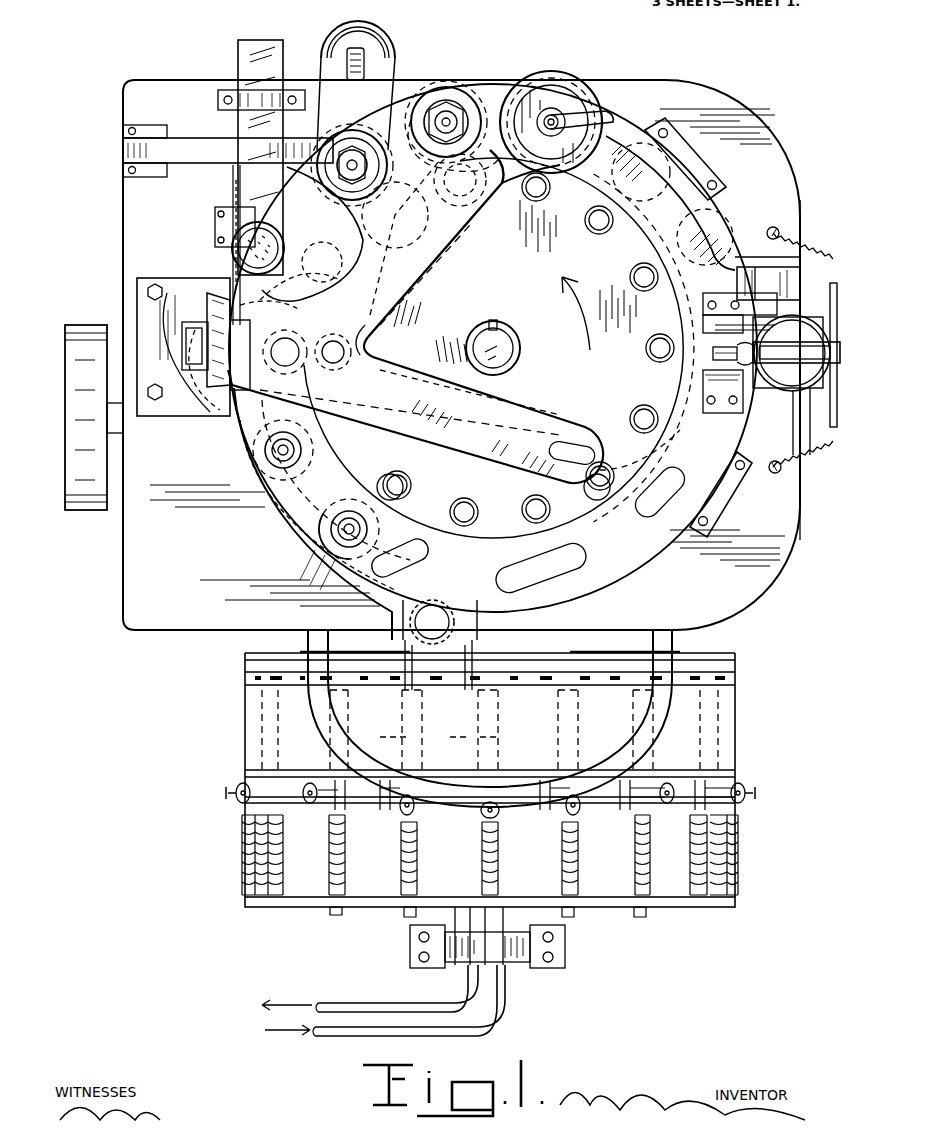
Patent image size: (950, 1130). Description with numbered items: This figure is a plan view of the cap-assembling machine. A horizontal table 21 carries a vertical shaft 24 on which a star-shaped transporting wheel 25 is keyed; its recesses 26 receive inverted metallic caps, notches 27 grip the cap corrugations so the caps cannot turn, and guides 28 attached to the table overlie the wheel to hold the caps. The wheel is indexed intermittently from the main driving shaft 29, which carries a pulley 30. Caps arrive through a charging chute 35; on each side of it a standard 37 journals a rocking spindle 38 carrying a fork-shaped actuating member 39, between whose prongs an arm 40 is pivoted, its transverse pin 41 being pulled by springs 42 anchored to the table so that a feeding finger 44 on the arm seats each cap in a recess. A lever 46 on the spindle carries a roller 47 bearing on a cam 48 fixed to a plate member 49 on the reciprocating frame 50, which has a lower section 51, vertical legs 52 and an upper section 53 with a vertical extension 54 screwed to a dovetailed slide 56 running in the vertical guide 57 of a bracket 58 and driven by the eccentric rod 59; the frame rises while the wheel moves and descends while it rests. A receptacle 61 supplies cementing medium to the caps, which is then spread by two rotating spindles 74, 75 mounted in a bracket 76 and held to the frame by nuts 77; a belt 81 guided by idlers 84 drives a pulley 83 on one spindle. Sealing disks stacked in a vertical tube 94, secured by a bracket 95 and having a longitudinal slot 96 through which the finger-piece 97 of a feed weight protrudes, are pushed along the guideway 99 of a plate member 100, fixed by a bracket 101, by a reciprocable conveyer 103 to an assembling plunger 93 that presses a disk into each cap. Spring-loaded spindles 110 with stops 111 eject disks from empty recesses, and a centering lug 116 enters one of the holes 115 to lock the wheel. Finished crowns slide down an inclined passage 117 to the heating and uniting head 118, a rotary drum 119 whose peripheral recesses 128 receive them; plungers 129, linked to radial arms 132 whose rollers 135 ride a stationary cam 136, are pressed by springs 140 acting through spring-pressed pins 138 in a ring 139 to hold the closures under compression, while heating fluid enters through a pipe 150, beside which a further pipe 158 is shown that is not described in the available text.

The horizontal table 21 is at (640, 85).
The vertical shaft 24 is at (505, 350).
The transporting wheel 25 is at (668, 588).
The recesses 26 is at (560, 590).
The notches 27 is at (680, 332).
The guides 28 is at (488, 545).
The main driving shaft 29 is at (115, 425).
The pulley 30 is at (80, 325).
The charging chute 35 is at (815, 390).
The standard 37 is at (713, 352).
The rocking spindle 38 is at (748, 392).
The fork-shaped actuating member 39 is at (792, 353).
The arm 40 is at (795, 395).
The transverse pin 41 is at (834, 283).
The springs 42 is at (810, 260).
The feeding finger 44 is at (798, 345).
The lever 46 is at (745, 315).
The roller 47 is at (750, 268).
The cam 48 is at (803, 230).
The plate member 49 is at (760, 290).
The frame 50 is at (415, 277).
The lower section 51 is at (562, 440).
The vertical legs 52 is at (560, 420).
The upper section 53 is at (373, 375).
The vertical extension 54 is at (240, 395).
The slide 56 is at (215, 300).
The vertical guide 57 is at (218, 405).
The bracket 58 is at (200, 405).
The rod 59 is at (190, 340).
The receptacle 61 is at (565, 85).
The spindle 74 is at (447, 120).
The spindle 75 is at (430, 190).
The bracket 76 is at (188, 150).
The nuts 77 is at (458, 112).
The belt 81 is at (340, 130).
The pulley 83 is at (345, 234).
The idlers 84 is at (355, 48).
The assembling plunger 93 is at (305, 320).
The vertical tube 94 is at (232, 242).
The bracket 95 is at (220, 214).
The longitudinal slot 96 is at (300, 255).
The finger-piece 97 is at (335, 272).
The guideway 99 is at (232, 180).
The plate member 100 is at (234, 190).
The bracket 101 is at (225, 100).
The reciprocable conveyer 103 is at (250, 48).
The spindles 110 is at (272, 455).
The stops 111 is at (283, 455).
The holes 115 is at (392, 490).
The centering lug 116 is at (335, 346).
The inclined passage 117 is at (402, 616).
The heating and uniting head 118 is at (735, 755).
The rotary drum 119 is at (700, 700).
The peripheral recesses 128 is at (440, 680).
The plungers 129 is at (440, 736).
The radial arms 132 is at (448, 810).
The rollers 135 is at (400, 810).
The cam 136 is at (632, 745).
The spring pressed pins 138 is at (640, 872).
The ring 139 is at (605, 896).
The springs 140 is at (565, 868).
The pipe 150 is at (505, 1018).
The pipe 158 is at (363, 1003).